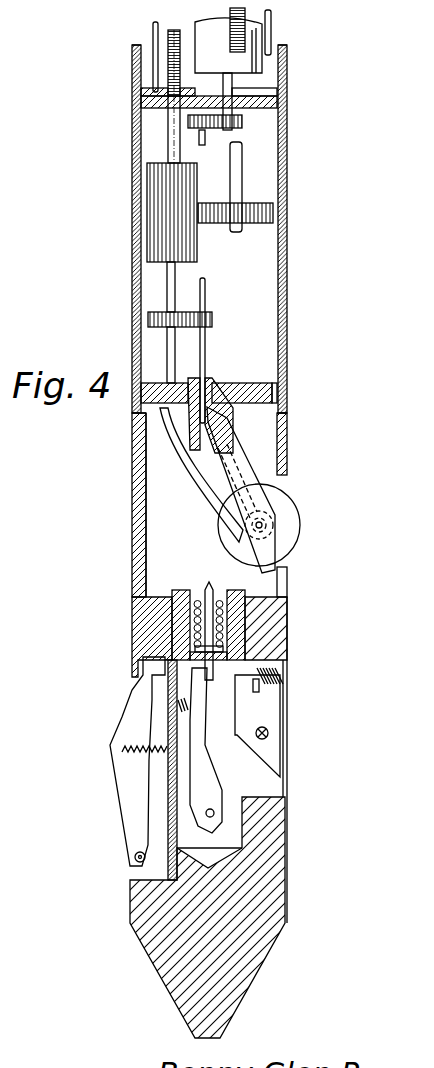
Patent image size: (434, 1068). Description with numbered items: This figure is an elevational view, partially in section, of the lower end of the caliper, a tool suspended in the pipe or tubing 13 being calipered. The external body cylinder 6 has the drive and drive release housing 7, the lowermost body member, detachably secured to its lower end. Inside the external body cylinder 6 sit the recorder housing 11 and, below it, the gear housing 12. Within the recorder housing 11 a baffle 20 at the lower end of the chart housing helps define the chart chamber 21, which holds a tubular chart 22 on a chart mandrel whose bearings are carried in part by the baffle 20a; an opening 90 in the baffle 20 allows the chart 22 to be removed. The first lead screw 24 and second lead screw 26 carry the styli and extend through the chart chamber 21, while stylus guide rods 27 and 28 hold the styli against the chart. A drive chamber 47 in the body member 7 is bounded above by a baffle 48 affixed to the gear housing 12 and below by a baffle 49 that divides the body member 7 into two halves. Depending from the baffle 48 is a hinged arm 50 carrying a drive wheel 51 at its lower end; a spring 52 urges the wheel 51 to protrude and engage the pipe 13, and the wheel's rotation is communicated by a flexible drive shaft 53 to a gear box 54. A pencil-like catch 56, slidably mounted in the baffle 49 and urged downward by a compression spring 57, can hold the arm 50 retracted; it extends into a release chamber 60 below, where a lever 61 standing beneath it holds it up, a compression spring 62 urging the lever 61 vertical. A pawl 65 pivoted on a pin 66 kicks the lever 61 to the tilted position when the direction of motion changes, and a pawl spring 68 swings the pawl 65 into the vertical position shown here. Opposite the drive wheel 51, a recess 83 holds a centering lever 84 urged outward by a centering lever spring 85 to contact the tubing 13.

The external body cylinder 6 is at (133, 395).
The drive and drive release housing 7 is at (133, 438).
The recorder housing 11 is at (140, 78).
The gear housing 12 is at (140, 151).
The pipe or tubing 13 is at (12, 163).
The baffle 20 is at (189, 87).
The baffle 20a is at (287, 106).
The chart chamber 21 is at (268, 78).
The tubular chart 22 is at (258, 62).
The first lead screw 24 is at (232, 35).
The second lead screw 26 is at (172, 118).
The stylus guide rod 27 is at (272, 24).
The stylus guide rod 28 is at (150, 26).
The drive chamber 47 is at (150, 507).
The baffle 48 is at (235, 392).
The baffle 49 is at (160, 612).
The hinged arm 50 is at (238, 462).
The drive wheel 51 is at (288, 518).
The spring 52 is at (178, 447).
The flexible drive shaft 53 is at (232, 428).
The gear box 54 is at (233, 275).
The catch 56 is at (220, 587).
The compression spring 57 is at (227, 613).
The release chamber 60 is at (232, 835).
The lever 61 is at (198, 697).
The compression spring 62 is at (178, 720).
The pawl 65 is at (270, 707).
The pin 66 is at (265, 735).
The pawl spring 68 is at (278, 688).
The recess 83 is at (148, 875).
The centering lever 84 is at (125, 808).
The centering lever spring 85 is at (147, 766).
The opening 90 is at (260, 93).